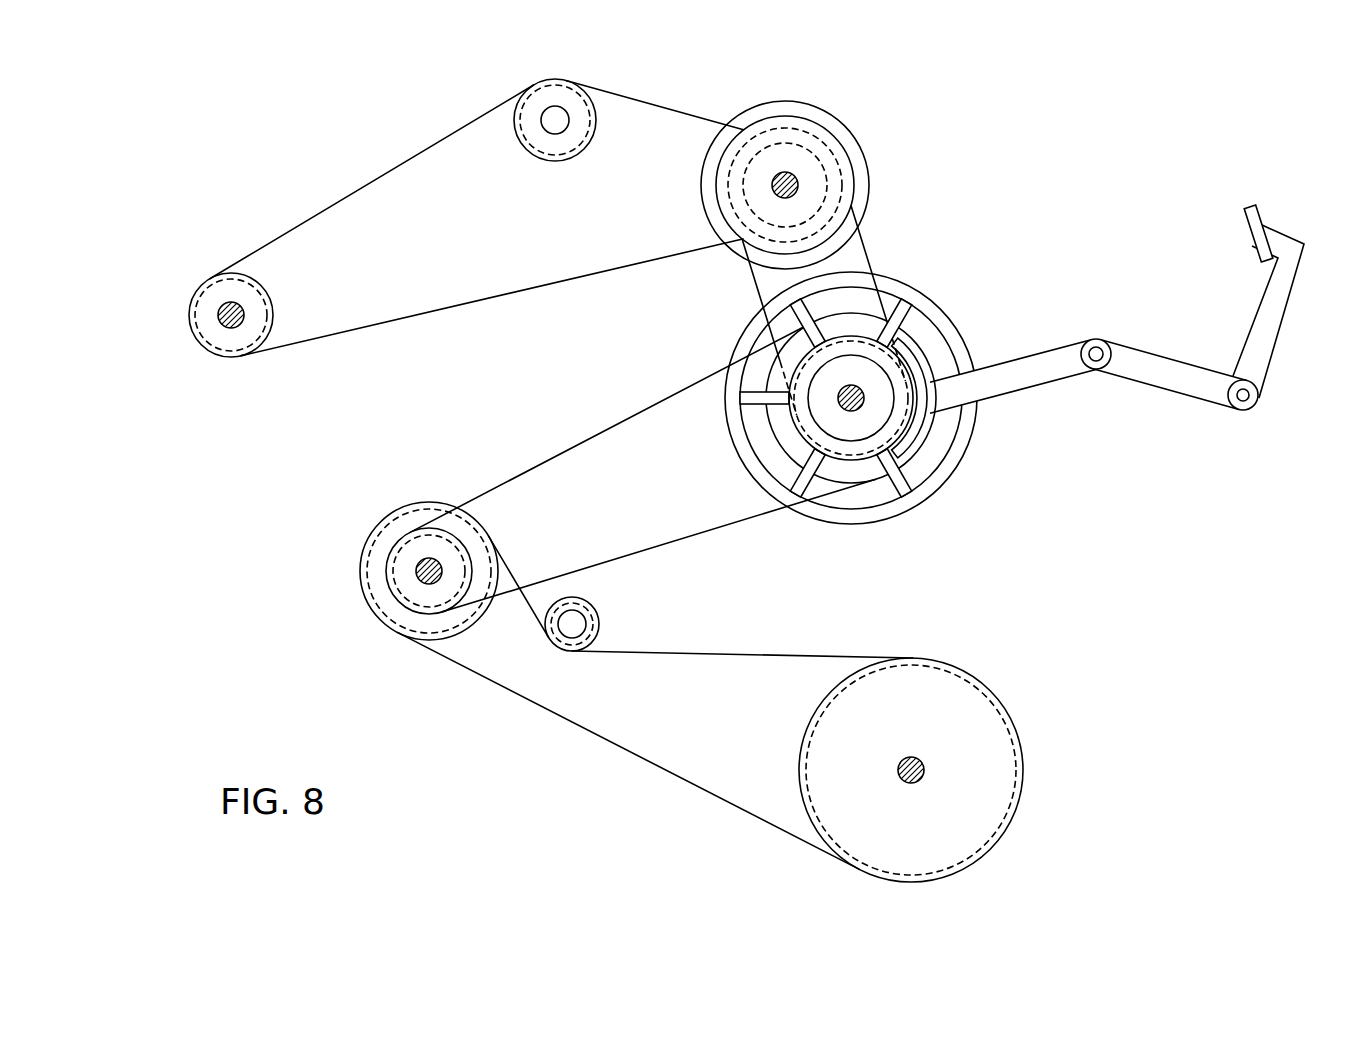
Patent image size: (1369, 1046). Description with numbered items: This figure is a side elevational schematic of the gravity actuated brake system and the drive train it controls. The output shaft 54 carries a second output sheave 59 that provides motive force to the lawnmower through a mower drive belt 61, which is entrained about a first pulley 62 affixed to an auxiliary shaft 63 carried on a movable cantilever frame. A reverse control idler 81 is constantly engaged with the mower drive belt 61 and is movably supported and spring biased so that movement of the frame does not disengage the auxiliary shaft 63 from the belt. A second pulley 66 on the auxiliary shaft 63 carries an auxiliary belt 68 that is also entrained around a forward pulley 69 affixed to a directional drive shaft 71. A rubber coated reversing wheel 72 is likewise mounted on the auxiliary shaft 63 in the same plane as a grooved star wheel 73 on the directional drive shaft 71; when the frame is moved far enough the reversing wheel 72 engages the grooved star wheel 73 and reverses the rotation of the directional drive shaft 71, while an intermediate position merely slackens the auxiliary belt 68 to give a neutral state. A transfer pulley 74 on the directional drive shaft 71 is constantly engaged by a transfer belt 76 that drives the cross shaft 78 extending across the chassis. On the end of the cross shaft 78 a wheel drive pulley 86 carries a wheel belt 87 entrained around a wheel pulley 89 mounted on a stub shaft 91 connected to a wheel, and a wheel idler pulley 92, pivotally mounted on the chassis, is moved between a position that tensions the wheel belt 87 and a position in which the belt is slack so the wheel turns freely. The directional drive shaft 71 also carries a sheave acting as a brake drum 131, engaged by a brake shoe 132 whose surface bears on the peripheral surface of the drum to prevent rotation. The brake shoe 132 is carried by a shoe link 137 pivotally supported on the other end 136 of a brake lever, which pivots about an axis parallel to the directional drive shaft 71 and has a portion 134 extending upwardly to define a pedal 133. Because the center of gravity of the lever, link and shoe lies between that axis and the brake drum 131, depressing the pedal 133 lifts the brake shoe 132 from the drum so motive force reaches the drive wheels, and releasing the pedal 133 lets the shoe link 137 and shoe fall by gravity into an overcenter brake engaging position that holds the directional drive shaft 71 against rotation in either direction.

The output shaft 54 is at (232, 324).
The second output sheave 59 is at (273, 300).
The mower drive belt 61 is at (353, 191).
The first pulley 62 is at (750, 166).
The auxiliary shaft 63 is at (793, 178).
The second pulley 66 is at (783, 128).
The auxiliary belt 68 is at (757, 291).
The forward pulley 69 is at (790, 415).
The directional drive shaft 71 is at (856, 408).
The rubber coated reversing wheel 72 is at (863, 165).
The grooved star wheel 73 is at (747, 338).
The transfer pulley 74 is at (783, 440).
The transfer belt 76 is at (664, 545).
The cross shaft 78 is at (423, 577).
The reverse control idler 81 is at (527, 148).
The wheel drive pulley 86 is at (372, 560).
The wheel belt 87 is at (727, 660).
The wheel pulley 89 is at (930, 683).
The stub shaft 91 is at (900, 766).
The wheel idler pulley 92 is at (597, 617).
The brake drum 131 is at (865, 335).
The brake shoe 132 is at (913, 353).
The pedal 133 is at (1253, 231).
The upwardly extending portion 134 is at (1288, 275).
The other end of brake lever 136 is at (1157, 375).
The shoe link 137 is at (1025, 373).